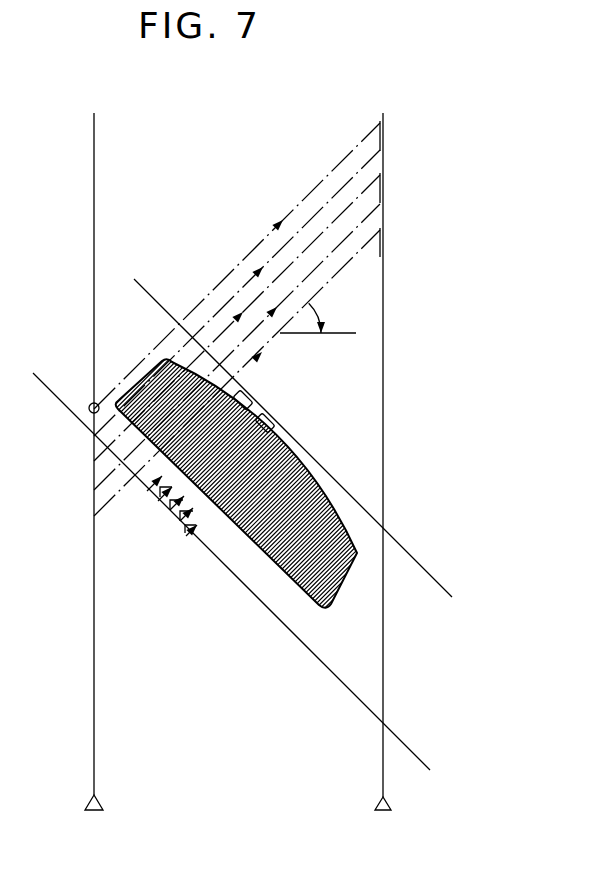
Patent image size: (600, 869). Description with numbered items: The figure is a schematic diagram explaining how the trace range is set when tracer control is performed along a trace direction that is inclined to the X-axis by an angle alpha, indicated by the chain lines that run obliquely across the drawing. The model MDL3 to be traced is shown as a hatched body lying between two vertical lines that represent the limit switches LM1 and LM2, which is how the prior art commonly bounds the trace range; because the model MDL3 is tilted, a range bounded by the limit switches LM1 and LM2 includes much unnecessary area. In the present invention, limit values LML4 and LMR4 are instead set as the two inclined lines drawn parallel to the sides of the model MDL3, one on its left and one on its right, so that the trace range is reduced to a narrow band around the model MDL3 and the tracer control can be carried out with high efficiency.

The limit switch LM1 is at (105, 481).
The limit switch LM2 is at (397, 481).
The limit value LMR4 is at (422, 562).
The limit value LML4 is at (322, 662).
The model MDL3 is at (250, 546).